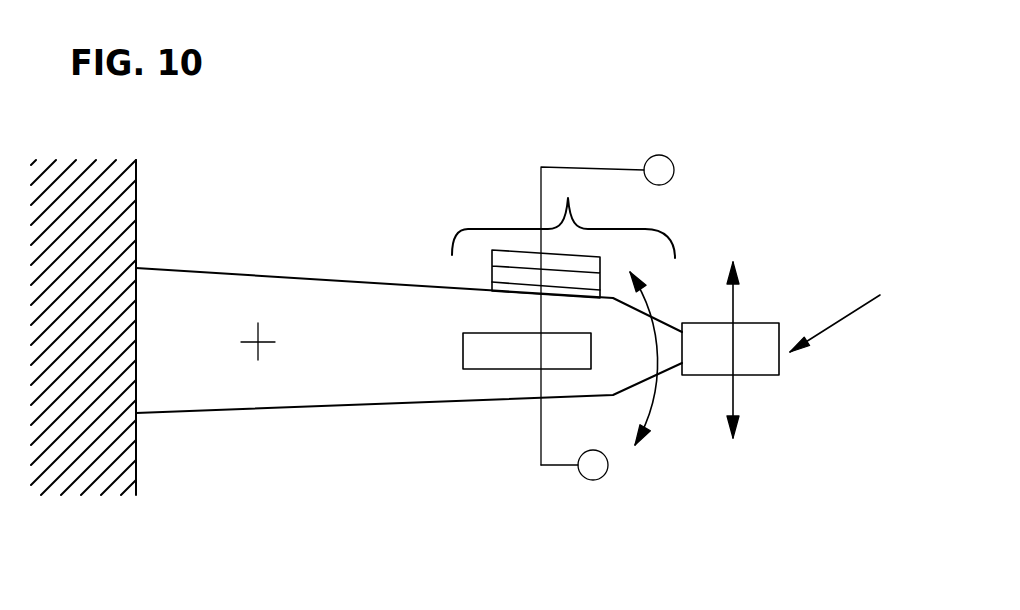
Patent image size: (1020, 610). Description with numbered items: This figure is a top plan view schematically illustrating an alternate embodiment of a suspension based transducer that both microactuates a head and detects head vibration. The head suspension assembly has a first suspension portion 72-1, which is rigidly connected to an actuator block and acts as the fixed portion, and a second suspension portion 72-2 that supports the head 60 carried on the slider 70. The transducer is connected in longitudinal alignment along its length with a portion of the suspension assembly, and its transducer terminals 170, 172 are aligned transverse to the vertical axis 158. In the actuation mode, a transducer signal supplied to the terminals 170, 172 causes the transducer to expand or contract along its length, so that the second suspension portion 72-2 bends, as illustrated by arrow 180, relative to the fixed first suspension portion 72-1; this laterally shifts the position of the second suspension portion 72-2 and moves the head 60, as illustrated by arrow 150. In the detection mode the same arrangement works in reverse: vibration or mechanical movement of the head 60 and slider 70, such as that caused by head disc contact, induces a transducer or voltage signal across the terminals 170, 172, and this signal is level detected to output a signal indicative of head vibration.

The first suspension portion 72-1 is at (271, 275).
The second suspension portion 72-2 is at (563, 317).
The vertical axis 158 is at (258, 345).
The transducer terminal 170 is at (513, 250).
The transducer terminal 172 is at (492, 292).
The slider 70 is at (754, 329).
The head 60 is at (847, 315).
The arrow 150 is at (734, 405).
The arrow 180 is at (653, 415).